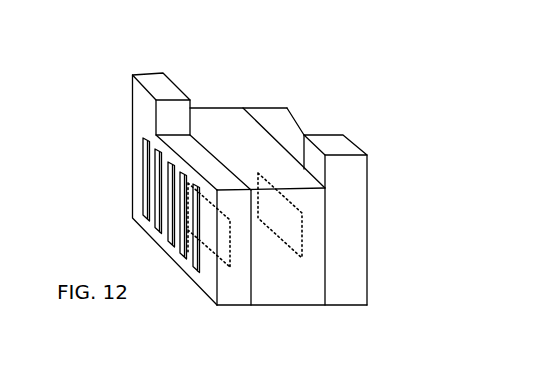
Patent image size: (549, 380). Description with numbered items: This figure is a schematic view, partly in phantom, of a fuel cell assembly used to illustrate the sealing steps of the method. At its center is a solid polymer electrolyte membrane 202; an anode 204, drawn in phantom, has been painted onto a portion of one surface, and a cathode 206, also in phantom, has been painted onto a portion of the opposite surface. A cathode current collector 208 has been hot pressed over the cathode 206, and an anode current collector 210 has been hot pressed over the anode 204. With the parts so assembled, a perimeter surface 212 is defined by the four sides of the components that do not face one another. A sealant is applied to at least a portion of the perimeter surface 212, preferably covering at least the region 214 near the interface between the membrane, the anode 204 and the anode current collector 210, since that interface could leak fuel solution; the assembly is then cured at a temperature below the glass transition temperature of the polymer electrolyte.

The solid polymer electrolyte membrane 202 is at (283, 283).
The anode 204 is at (279, 238).
The cathode 206 is at (227, 250).
The cathode current collector 208 is at (212, 287).
The anode current collector 210 is at (358, 277).
The perimeter surface 212 is at (217, 125).
The region 214 is at (264, 117).